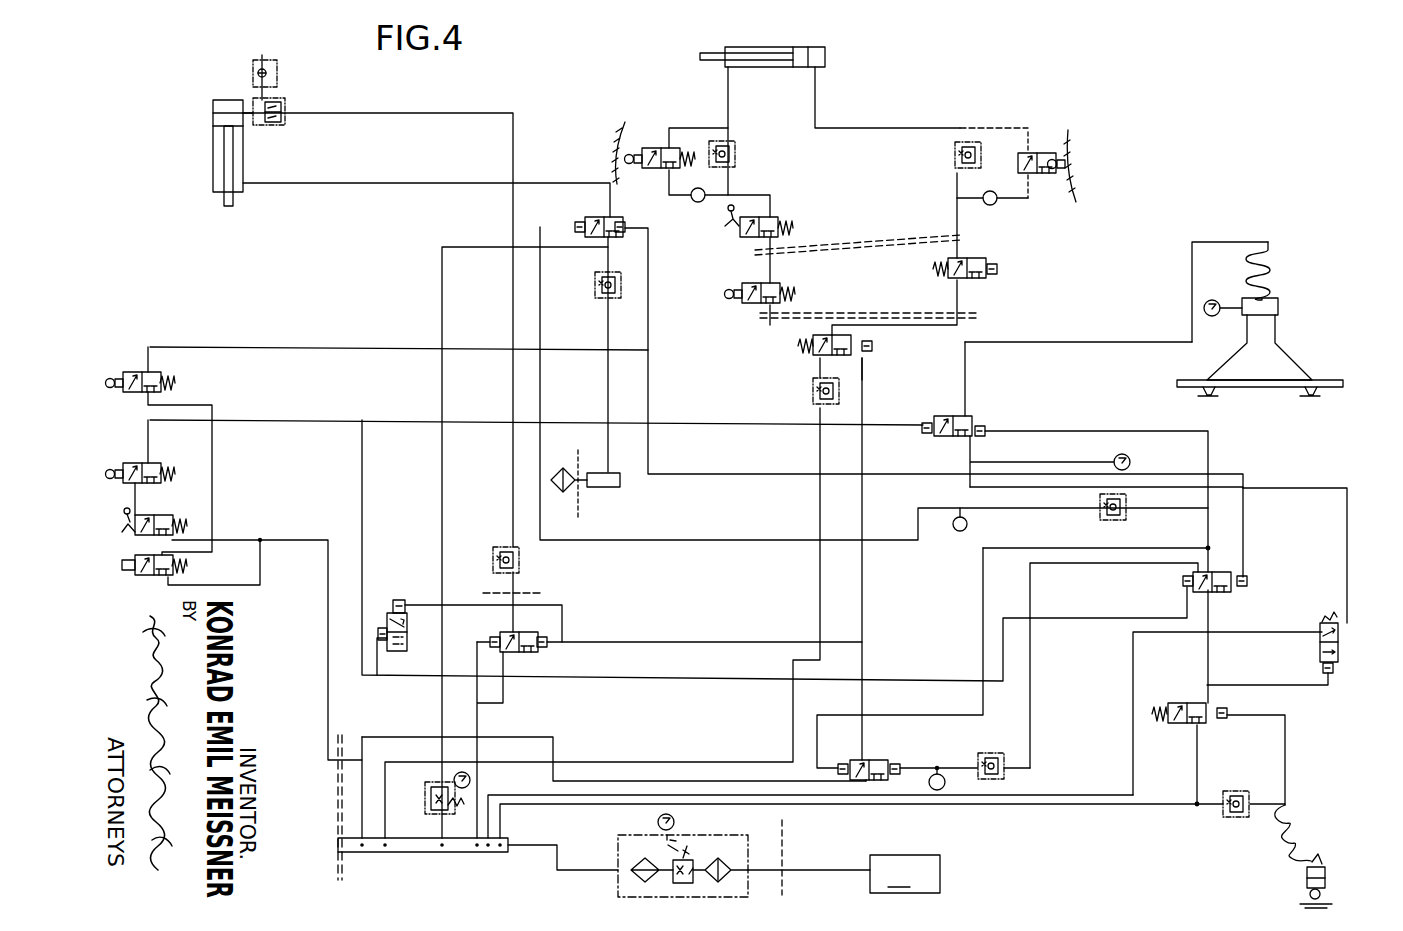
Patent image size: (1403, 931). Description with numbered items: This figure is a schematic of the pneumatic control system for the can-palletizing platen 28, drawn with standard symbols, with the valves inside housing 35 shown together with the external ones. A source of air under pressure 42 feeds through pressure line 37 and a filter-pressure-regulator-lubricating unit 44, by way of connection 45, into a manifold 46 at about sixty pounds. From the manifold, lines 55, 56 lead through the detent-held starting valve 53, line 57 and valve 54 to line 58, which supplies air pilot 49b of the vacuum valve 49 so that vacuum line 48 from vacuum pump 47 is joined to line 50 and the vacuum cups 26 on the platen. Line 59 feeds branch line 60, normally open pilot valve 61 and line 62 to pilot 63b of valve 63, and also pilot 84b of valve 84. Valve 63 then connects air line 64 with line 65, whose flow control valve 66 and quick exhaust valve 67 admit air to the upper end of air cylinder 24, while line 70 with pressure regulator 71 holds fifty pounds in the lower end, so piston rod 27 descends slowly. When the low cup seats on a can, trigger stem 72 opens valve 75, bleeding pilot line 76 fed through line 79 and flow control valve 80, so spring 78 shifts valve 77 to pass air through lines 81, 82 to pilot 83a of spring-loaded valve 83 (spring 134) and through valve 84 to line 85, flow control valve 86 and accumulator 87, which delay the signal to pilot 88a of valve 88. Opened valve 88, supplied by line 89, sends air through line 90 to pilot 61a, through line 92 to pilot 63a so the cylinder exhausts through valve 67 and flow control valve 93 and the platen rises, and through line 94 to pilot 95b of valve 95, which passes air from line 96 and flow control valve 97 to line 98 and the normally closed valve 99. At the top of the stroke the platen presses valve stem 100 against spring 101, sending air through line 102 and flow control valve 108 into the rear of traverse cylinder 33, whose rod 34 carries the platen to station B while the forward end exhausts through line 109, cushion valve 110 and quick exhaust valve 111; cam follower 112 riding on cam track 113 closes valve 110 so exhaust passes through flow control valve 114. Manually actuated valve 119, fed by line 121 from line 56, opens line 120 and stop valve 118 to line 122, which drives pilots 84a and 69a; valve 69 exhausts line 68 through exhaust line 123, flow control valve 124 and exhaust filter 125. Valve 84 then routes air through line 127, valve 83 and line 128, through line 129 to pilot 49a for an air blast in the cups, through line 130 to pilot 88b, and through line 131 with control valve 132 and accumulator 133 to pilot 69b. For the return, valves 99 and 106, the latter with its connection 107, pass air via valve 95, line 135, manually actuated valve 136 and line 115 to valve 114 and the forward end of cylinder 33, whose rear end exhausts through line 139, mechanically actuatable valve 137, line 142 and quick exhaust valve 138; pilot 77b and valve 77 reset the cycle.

The air cylinder 24 is at (213, 136).
The piston rod 27 is at (233, 203).
The flow control valve 93 is at (276, 66).
The quick exhaust valve 67 is at (284, 118).
The line 65 is at (464, 113).
The line 68 is at (412, 183).
The line 70 is at (440, 320).
The traverse cylinder 33 is at (792, 48).
The traverse rod 34 is at (703, 52).
The line 115 is at (729, 182).
The line 139 is at (916, 126).
The line 109 is at (726, 124).
The cushion valve 110 is at (654, 146).
The cam follower 112 is at (628, 147).
The cam track 113 is at (622, 131).
The flow control valve 114 is at (736, 150).
The quick exhaust valve 111 is at (698, 202).
The mechanically actuatable valve 137 is at (1030, 150).
The flow control valve 108 is at (950, 164).
The line 142 is at (956, 198).
The quick exhaust valve 138 is at (980, 198).
The line 102 is at (952, 240).
The spring 101 is at (932, 264).
The mechanically actuatable valve 99 is at (990, 252).
The valve stem 100 is at (1000, 276).
The line 98 is at (934, 318).
The housing 35 is at (828, 316).
The manually actuated valve 136 is at (782, 214).
The line 135 is at (780, 264).
The normally closed valve 106 is at (748, 282).
The conduit 107 is at (762, 320).
The spring-pilot controlled valve 95 is at (866, 362).
The air pilot 95b is at (874, 340).
The flow control valve 97 is at (808, 398).
The line 94 is at (866, 406).
The line 96 is at (820, 496).
The air pilot controlled valve 69 is at (606, 216).
The air pilot 69b is at (572, 218).
The air pilot 69a is at (625, 226).
The exhaust line 123 is at (608, 244).
The flow control valve 124 is at (594, 290).
The line 131 is at (548, 368).
The exhaust filter 125 is at (574, 484).
The line 122 is at (302, 346).
The line 58 is at (314, 418).
The stop valve 118 is at (137, 370).
The line 120 is at (216, 454).
The valve 54 is at (136, 464).
The starting valve 53 is at (160, 514).
The line 57 is at (130, 510).
The manually-actuated valve 119 is at (161, 582).
The line 121 is at (240, 580).
The line 56 is at (274, 540).
The line 59 is at (364, 544).
The line 85 is at (1029, 740).
The pilot valve 61 is at (382, 624).
The air pilot 61a is at (404, 600).
The branch line 60 is at (383, 650).
The line 90 is at (562, 606).
The air pilot controlled valve 63 is at (530, 632).
The air pilot 63b is at (486, 642).
The air pilot 63a is at (544, 646).
The line 62 is at (482, 642).
The line 92 is at (574, 636).
The flow control valve 66 is at (530, 556).
The air line 64 is at (520, 690).
The line 89 is at (506, 738).
The line 55 is at (360, 786).
The pressure regulator 71 is at (430, 810).
The manifold 46 is at (464, 852).
The conduit 45 is at (520, 846).
The filter-pressure-regulator-lubricating unit 44 is at (722, 838).
The pressure line 37 is at (800, 862).
The source of air under pressure 42 is at (867, 873).
The air pilot control valve 88 is at (866, 760).
The air pilot 88b is at (838, 764).
The air pilot 88a is at (900, 754).
The accumulator 87 is at (929, 792).
The flow control valve 86 is at (1012, 776).
The line 130 is at (1080, 548).
The line 129 is at (1200, 530).
The accumulator 133 is at (962, 526).
The control valve 132 is at (1128, 494).
The vacuum valve 49 is at (964, 416).
The air pilot 49b is at (924, 436).
The air pilot 49a is at (992, 414).
The vacuum line 48 is at (1023, 464).
The vacuum pump 47 is at (1132, 457).
The line 50 is at (1128, 346).
The platen 28 is at (1263, 314).
The vacuum cups 26 is at (1208, 399).
The air pilot controlled valve 84 is at (1214, 591).
The air pilot 84a is at (1247, 576).
The air pilot 84b is at (1182, 577).
The line 128 is at (1346, 594).
The spring 134 is at (1336, 608).
The normally closed valve 83 is at (1318, 654).
The air pilot 83a is at (1340, 673).
The line 82 is at (1306, 686).
The line 81 is at (1196, 672).
The line 127 is at (1256, 636).
The spring 78 is at (1148, 710).
The spring-pilot controlled valve 77 is at (1174, 726).
The air pilot 77b is at (1224, 722).
The pilot line 76 is at (1286, 768).
The line 79 is at (1042, 802).
The flow control valve 80 is at (1218, 810).
The valve 75 is at (1330, 868).
The trigger stem 72 is at (1326, 890).